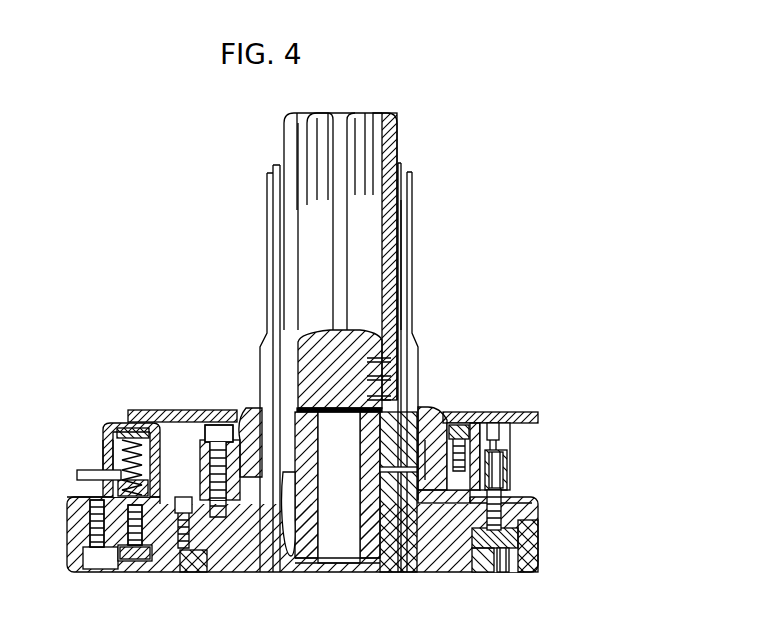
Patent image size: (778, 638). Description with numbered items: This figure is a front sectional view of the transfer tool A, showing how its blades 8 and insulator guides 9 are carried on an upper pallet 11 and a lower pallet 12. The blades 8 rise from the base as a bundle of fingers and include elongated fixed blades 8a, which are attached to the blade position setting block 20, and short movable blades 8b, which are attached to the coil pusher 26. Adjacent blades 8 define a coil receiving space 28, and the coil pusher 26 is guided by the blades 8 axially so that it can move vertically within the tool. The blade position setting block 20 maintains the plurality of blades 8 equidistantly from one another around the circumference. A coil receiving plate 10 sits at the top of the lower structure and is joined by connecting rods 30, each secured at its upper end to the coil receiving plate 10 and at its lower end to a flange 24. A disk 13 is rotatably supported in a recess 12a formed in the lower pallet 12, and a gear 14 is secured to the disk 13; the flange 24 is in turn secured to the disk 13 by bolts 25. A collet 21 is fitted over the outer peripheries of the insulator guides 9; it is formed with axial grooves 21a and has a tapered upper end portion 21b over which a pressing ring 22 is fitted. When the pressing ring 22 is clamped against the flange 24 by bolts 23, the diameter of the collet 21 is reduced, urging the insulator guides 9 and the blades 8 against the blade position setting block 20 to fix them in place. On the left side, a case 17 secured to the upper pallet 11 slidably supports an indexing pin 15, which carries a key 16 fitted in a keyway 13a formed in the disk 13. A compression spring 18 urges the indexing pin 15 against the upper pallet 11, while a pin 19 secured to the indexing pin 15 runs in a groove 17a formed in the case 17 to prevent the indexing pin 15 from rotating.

The blades 8 is at (455, 70).
The elongated fixed blades 8a is at (295, 116).
The short movable blades 8b is at (387, 118).
The insulator guide 9 is at (403, 193).
The transfer tool A is at (408, 238).
The coil receiving plate 10 is at (530, 411).
The upper pallet 11 is at (525, 512).
The lower pallet 12 is at (530, 566).
The recess 12a is at (520, 545).
The disk 13 is at (482, 556).
The keyway 13a is at (172, 560).
The gear 14 is at (496, 562).
The indexing pin 15 is at (112, 560).
The key 16 is at (145, 560).
The case 17 is at (108, 428).
The groove 17a is at (105, 458).
The compression spring 18 is at (140, 428).
The pin 19 is at (78, 475).
The blade position setting block 20 is at (304, 560).
The collet 21 is at (437, 432).
The axial grooves 21a is at (250, 408).
The tapered upper end portion 21b is at (427, 440).
The pressing ring 22 is at (475, 430).
The bolts 23 is at (217, 428).
The flange 24 is at (505, 487).
The bolts 25 is at (186, 498).
The coil pusher 26 is at (370, 340).
The coil receiving space 28 is at (325, 152).
The connecting rods 30 is at (505, 462).